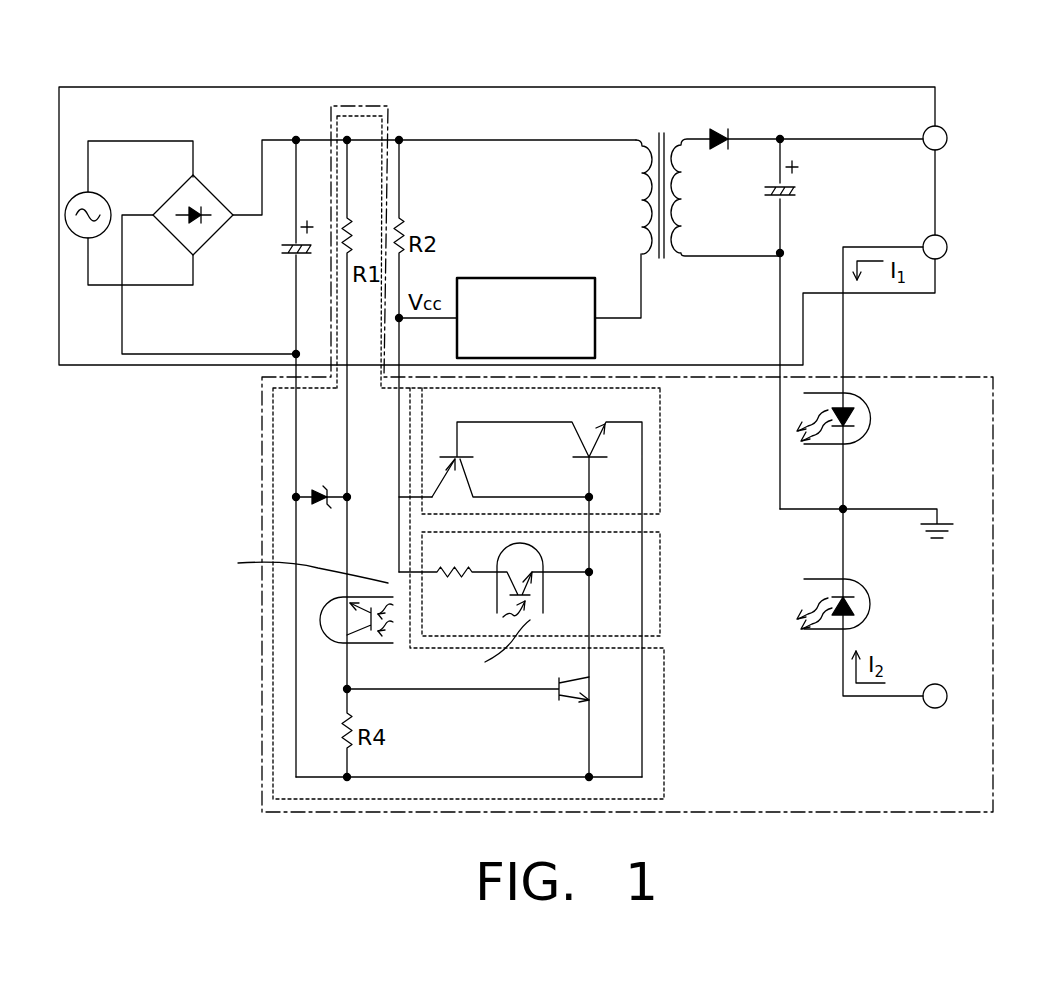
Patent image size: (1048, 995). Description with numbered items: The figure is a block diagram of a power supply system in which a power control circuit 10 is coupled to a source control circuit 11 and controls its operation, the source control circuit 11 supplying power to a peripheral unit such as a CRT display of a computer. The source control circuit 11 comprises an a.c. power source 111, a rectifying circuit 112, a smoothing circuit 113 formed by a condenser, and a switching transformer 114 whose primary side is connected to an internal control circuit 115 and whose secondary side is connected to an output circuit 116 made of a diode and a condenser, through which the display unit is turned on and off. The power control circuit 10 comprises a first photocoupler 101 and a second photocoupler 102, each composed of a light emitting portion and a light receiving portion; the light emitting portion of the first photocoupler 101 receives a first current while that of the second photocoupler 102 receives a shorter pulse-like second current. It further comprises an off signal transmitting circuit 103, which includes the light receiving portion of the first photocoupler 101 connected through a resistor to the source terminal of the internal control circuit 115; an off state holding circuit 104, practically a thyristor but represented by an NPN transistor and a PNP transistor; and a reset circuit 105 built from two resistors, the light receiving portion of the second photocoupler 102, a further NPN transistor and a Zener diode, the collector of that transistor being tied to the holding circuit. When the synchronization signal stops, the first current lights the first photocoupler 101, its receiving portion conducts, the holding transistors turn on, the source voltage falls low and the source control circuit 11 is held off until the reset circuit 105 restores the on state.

The power control circuit 10 is at (260, 667).
The source control circuit 11 is at (567, 87).
The first photocoupler 101 is at (872, 418).
The second photocoupler 102 is at (872, 606).
The off signal transmitting circuit 103 is at (661, 558).
The off state holding circuit 104 is at (661, 478).
The reset circuit 105 is at (665, 689).
The a.c. power source 111 is at (104, 198).
The rectifying circuit 112 is at (212, 190).
The smoothing circuit 113 is at (290, 303).
The switching transformer 114 is at (665, 143).
The internal control circuit 115 is at (557, 278).
The output circuit 116 is at (745, 205).